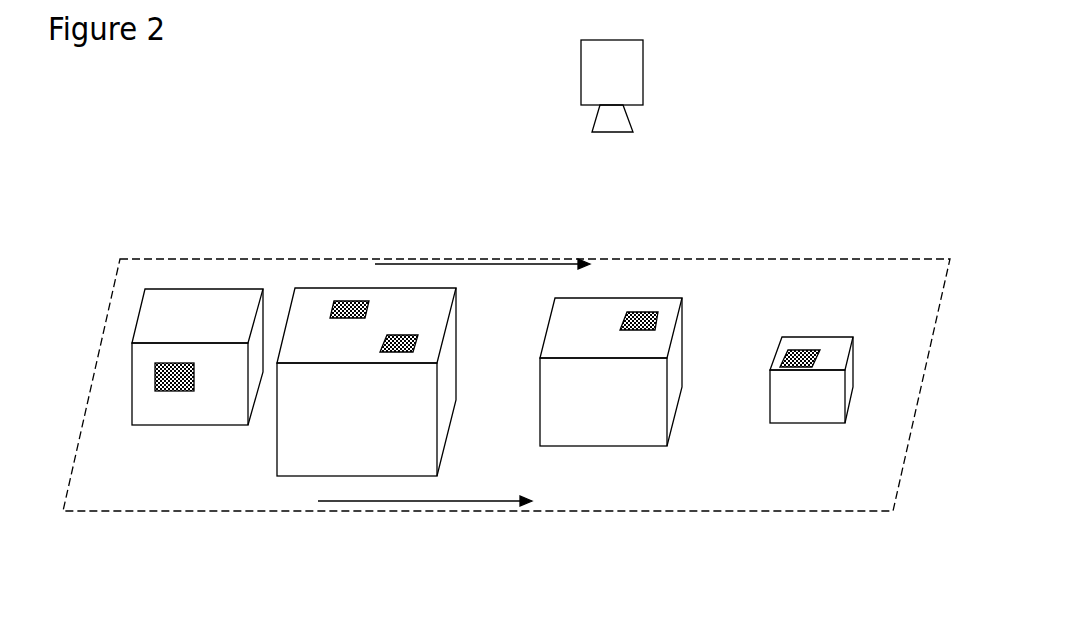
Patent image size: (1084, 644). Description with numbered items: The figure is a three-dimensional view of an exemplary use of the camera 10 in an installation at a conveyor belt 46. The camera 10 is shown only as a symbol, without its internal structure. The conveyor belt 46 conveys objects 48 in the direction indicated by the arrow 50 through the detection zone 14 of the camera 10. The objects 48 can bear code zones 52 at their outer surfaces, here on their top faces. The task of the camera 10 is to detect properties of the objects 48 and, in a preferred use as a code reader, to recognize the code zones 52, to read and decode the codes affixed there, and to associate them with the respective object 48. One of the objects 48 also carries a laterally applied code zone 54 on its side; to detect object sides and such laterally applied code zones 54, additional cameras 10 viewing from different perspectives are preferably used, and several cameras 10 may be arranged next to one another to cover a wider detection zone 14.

The camera 10 is at (630, 78).
The detection zone 14 is at (608, 205).
The conveyor belt 46 is at (857, 512).
The objects 48 is at (155, 303).
The arrow 50 is at (407, 501).
The code zones 52 is at (397, 335).
The laterally applied code zones 54 is at (163, 377).